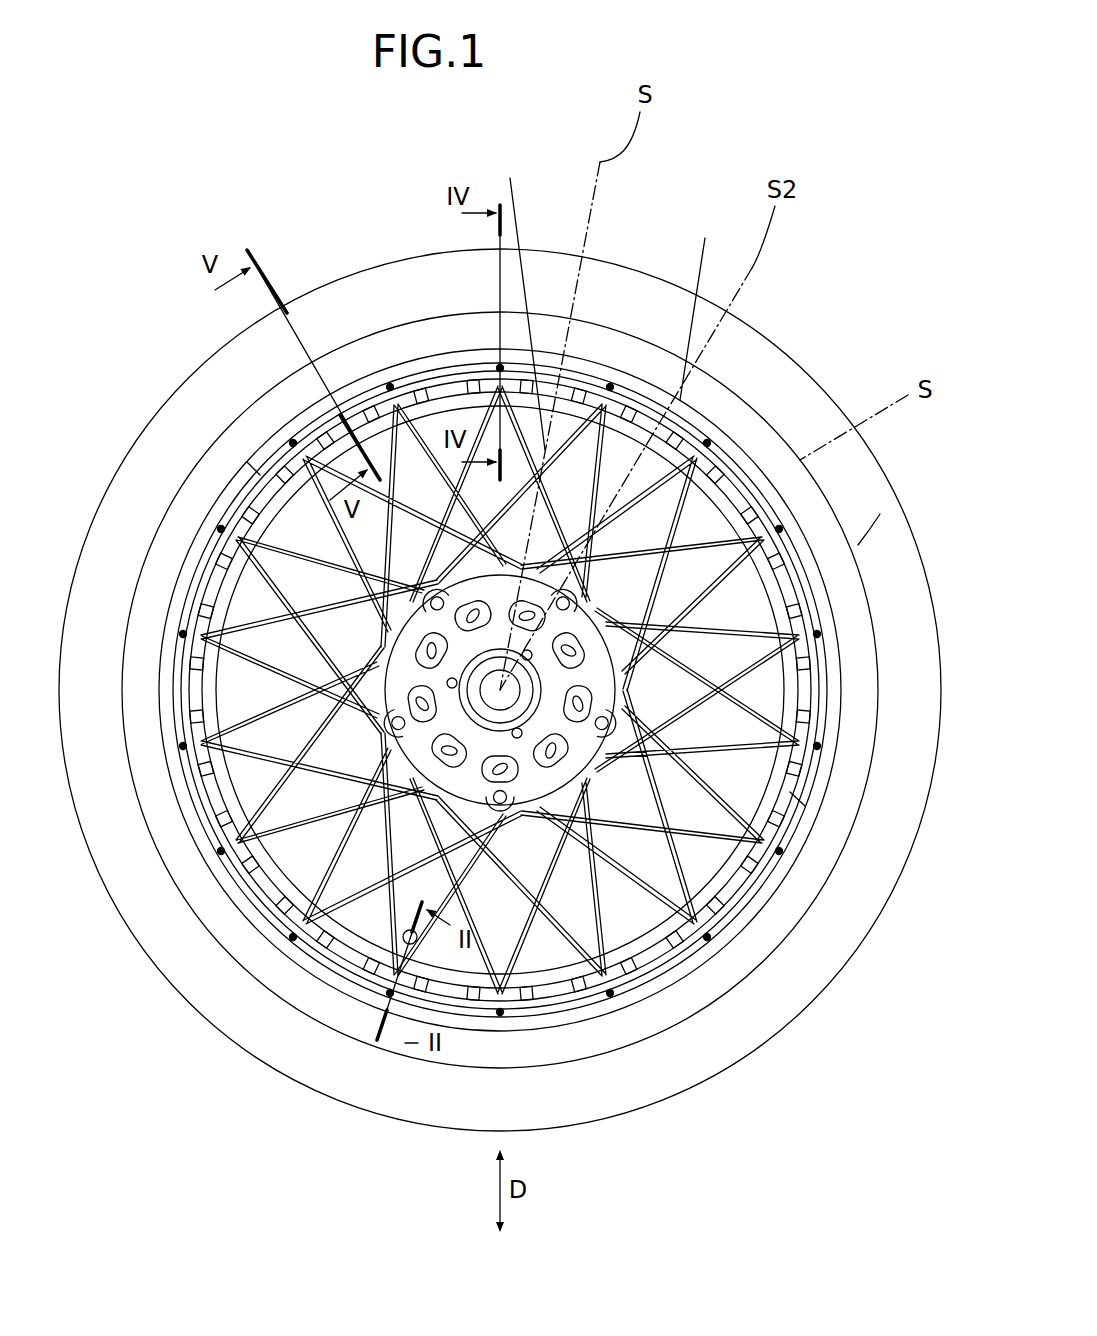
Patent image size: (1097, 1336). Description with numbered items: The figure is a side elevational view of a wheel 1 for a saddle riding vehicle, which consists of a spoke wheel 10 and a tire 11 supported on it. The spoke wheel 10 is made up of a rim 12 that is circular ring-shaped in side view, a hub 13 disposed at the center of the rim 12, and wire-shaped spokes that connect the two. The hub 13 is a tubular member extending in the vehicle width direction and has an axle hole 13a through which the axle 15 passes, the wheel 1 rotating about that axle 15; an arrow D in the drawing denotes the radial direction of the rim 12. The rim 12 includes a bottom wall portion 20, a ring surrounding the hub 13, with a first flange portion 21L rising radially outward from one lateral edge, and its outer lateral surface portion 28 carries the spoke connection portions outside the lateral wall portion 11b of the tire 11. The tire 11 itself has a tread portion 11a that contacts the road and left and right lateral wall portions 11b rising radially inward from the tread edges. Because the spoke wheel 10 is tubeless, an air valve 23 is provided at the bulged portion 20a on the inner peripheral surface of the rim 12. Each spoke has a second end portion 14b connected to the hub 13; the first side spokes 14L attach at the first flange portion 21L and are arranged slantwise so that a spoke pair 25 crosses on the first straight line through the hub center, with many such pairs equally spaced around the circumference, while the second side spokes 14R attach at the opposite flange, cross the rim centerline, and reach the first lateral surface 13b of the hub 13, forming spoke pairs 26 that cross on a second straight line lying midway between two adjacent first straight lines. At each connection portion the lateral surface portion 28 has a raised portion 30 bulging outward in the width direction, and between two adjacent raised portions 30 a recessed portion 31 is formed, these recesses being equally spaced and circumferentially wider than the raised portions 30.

The wheel 1 is at (53, 300).
The spoke wheel 10 is at (257, 470).
The tire 11 is at (155, 415).
The tread portion 11a is at (742, 450).
The lateral wall portion 11b is at (806, 490).
The rim 12 is at (200, 556).
The hub 13 is at (182, 577).
The axle hole 13a is at (583, 1032).
The first lateral surface 13b is at (762, 862).
The first side spoke 14L is at (538, 440).
The second side spoke 14R is at (642, 430).
The second end portion 14b is at (253, 467).
The axle 15 is at (666, 985).
The bottom wall portion 20 is at (822, 1022).
The bulged portion 20a is at (862, 522).
The first flange portion 21L is at (852, 985).
The air valve 23 is at (416, 946).
The spoke pair 25 is at (503, 100).
The spoke pair 26 is at (688, 125).
The lateral surface portion 28 is at (443, 378).
The raised portion 30 is at (465, 382).
The recessed portion 31 is at (609, 298).